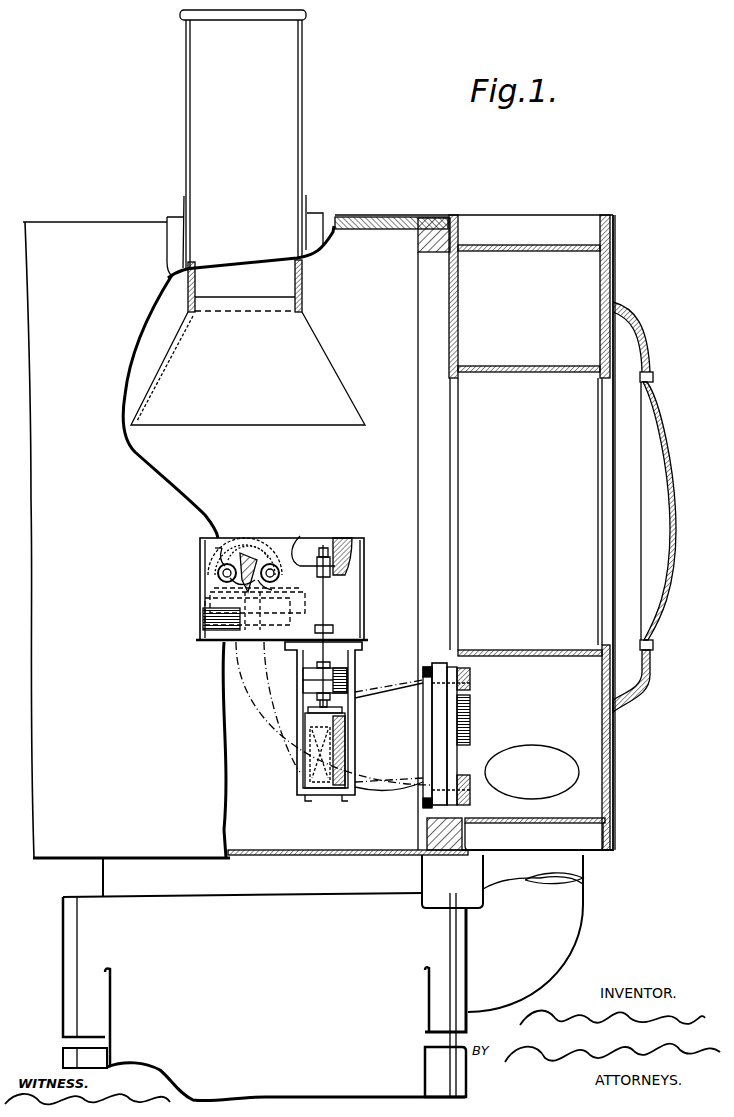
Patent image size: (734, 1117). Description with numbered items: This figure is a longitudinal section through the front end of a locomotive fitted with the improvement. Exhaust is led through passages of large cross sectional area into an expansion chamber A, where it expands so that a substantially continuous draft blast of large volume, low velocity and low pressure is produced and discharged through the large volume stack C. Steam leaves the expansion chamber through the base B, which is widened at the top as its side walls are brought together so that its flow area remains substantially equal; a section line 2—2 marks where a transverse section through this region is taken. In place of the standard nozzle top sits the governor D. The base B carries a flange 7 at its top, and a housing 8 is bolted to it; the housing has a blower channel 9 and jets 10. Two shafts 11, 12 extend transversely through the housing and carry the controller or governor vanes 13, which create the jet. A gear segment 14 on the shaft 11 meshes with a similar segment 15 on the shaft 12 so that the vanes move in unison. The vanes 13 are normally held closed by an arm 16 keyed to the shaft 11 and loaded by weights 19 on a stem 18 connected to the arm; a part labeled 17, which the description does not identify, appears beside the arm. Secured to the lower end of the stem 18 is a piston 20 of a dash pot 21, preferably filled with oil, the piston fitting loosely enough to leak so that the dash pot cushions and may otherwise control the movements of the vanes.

The section line 2— 2 is at (449, 186).
The flange 7 is at (206, 612).
The housing 8 is at (218, 568).
The blower channel 9 is at (215, 548).
The jets 10 is at (226, 546).
The shaft 11 is at (228, 578).
The shaft 12 is at (276, 566).
The controller or governor vanes 13 is at (256, 548).
The gear segment 14 is at (236, 590).
The gear segment 15 is at (275, 594).
The arm 16 is at (300, 536).
The quadrant segment 17 is at (343, 573).
The stem 18 is at (326, 604).
The weights 19 is at (304, 682).
The piston 20 is at (310, 768).
The dash pot 21 is at (315, 743).
The expansion chamber A is at (505, 532).
The base B is at (334, 716).
The stack C is at (245, 143).
The governor D is at (245, 550).